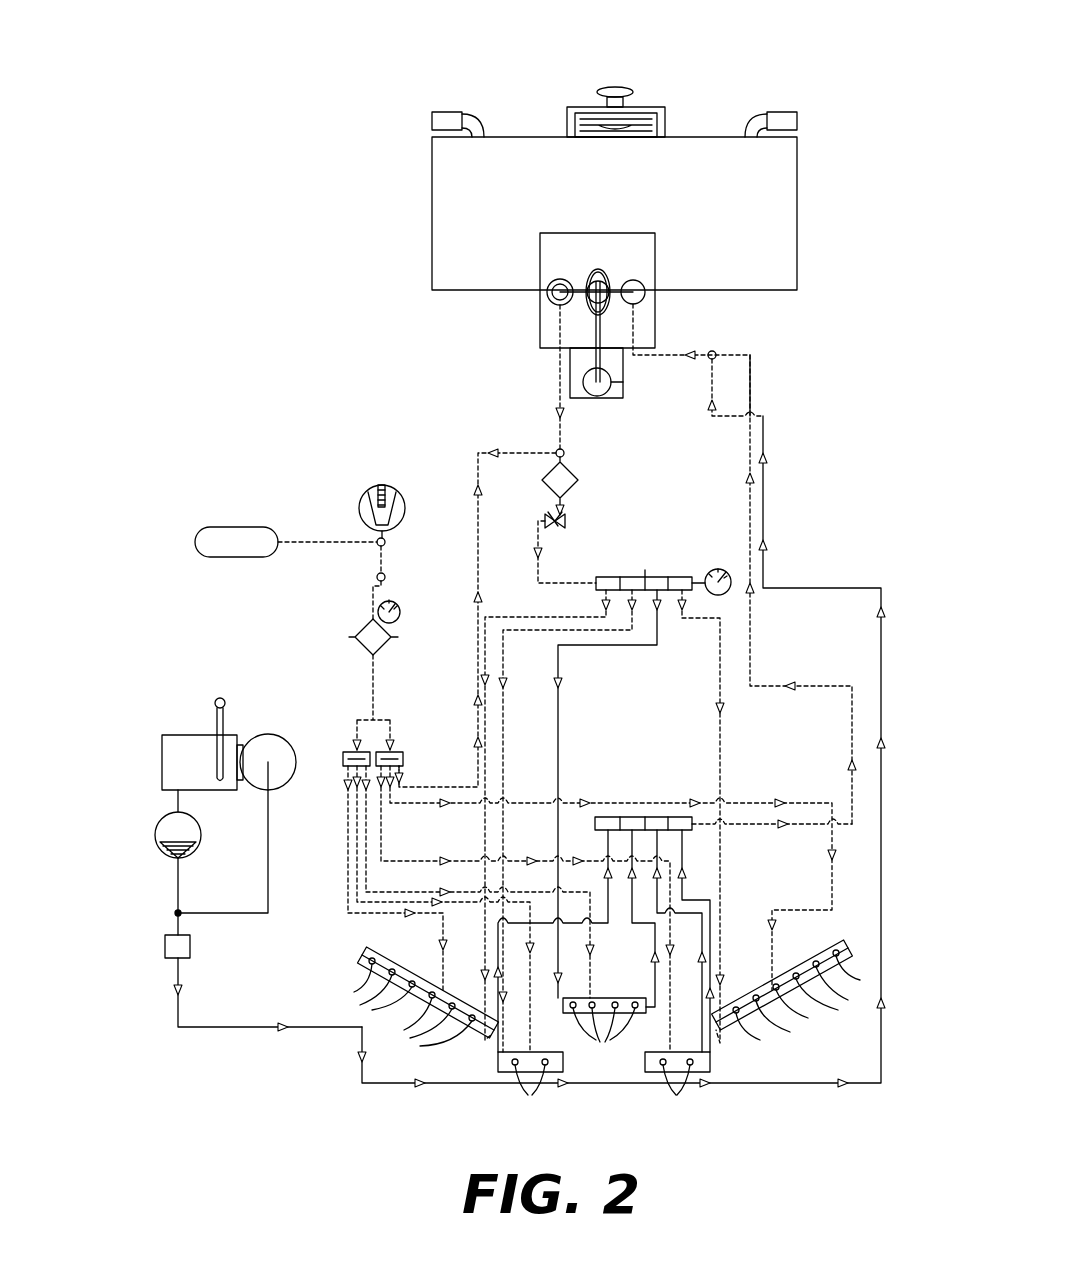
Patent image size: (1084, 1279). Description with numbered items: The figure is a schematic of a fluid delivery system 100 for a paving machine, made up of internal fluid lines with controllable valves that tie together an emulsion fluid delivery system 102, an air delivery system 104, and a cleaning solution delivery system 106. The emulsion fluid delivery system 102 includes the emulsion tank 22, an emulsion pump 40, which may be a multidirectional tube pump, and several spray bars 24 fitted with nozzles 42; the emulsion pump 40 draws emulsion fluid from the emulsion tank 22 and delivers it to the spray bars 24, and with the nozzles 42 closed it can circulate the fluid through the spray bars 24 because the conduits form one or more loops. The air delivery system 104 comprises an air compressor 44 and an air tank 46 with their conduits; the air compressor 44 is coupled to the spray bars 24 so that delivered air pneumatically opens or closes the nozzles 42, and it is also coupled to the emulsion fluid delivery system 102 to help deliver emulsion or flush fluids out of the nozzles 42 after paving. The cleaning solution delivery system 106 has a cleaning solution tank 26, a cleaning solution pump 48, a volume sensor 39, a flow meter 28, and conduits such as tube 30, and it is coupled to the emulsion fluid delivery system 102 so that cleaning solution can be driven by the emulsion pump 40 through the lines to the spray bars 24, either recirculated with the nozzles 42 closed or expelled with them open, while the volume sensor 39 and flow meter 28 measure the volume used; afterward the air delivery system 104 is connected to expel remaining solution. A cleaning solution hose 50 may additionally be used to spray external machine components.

The fluid delivery system 100 is at (834, 66).
The emulsion tank 22 is at (797, 213).
The emulsion pump 40 is at (655, 337).
The air compressor 44 is at (395, 492).
The air tank 46 is at (232, 527).
The emulsion fluid delivery system 102 is at (792, 480).
The air delivery system 104 is at (282, 592).
The cleaning solution tank 26 is at (175, 735).
The volume sensor 39 is at (222, 700).
The cleaning solution hose 50 is at (270, 737).
The cleaning solution pump 48 is at (160, 841).
The flow meter 28 is at (165, 947).
The tube 30 is at (180, 978).
The cleaning solution delivery system 106 is at (152, 1012).
The spray bars 24 is at (362, 955).
The nozzles 42 is at (605, 1037).